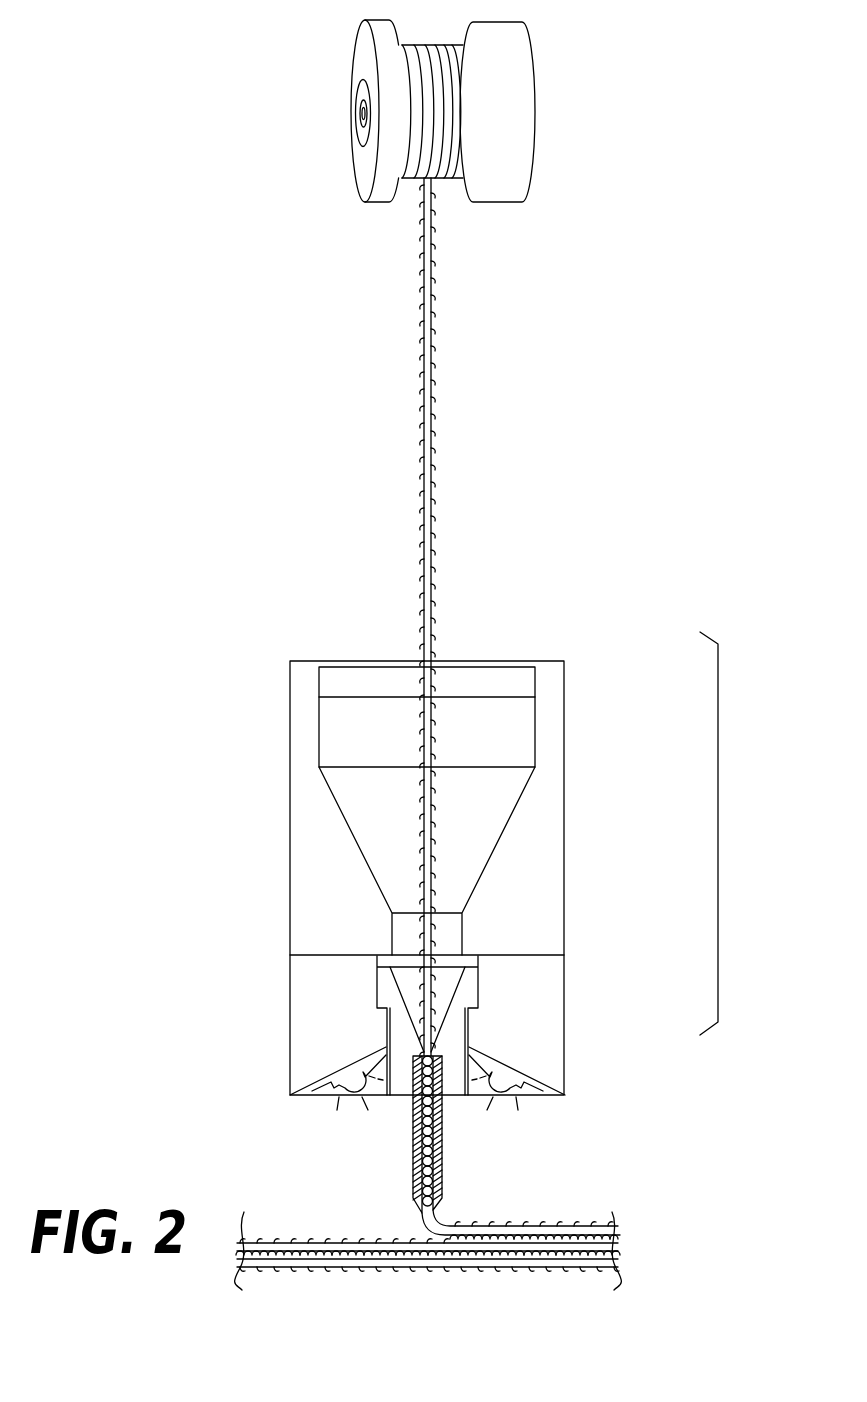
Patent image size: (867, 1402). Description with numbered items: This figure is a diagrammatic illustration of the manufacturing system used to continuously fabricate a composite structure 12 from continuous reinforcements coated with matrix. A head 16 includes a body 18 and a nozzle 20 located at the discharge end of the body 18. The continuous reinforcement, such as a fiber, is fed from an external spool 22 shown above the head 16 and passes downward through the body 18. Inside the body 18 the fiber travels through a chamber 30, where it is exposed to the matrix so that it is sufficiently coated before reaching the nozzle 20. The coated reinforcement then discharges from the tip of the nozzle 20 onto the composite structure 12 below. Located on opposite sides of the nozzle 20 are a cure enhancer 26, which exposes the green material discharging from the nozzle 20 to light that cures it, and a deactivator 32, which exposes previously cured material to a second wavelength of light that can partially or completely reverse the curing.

The composite structure 12 is at (587, 1262).
The head 16 is at (718, 851).
The body 18 is at (548, 939).
The nozzle 20 is at (443, 1150).
The external spool 22 is at (521, 186).
The cure enhancer 26 is at (520, 1100).
The chamber 30 is at (492, 746).
The deactivator 32 is at (335, 1100).